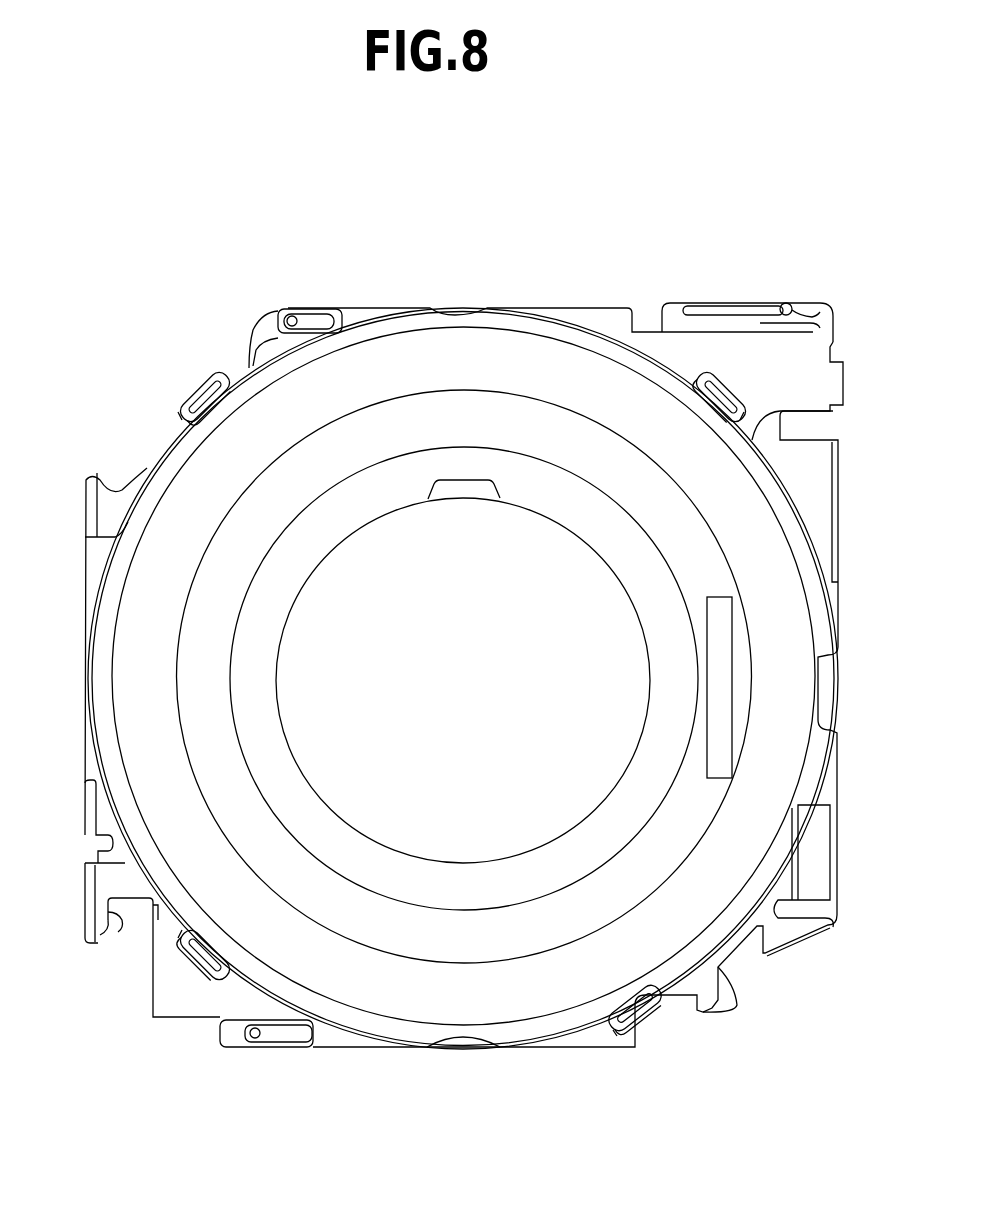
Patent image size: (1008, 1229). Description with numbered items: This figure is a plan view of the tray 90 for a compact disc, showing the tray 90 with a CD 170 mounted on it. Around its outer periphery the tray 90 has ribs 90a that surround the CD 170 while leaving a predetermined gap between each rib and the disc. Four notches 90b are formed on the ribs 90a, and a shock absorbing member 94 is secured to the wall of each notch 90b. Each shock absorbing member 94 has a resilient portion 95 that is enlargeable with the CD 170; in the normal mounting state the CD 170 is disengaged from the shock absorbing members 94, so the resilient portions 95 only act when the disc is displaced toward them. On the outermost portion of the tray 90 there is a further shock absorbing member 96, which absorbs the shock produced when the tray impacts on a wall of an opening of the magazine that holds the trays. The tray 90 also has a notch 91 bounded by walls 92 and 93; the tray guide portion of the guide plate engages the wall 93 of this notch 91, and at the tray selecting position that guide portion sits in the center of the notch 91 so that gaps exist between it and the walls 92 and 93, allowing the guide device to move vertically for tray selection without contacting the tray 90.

The tray 90 is at (847, 538).
The ribs 90a is at (838, 412).
The notches 90b is at (187, 427).
The notch 91 is at (125, 915).
The wall 92 is at (150, 930).
The wall 93 is at (113, 922).
The shock absorbing member 94 is at (205, 392).
The resilient portion 95 is at (222, 412).
The shock absorbing member 96 is at (740, 305).
The CD 170 is at (808, 762).